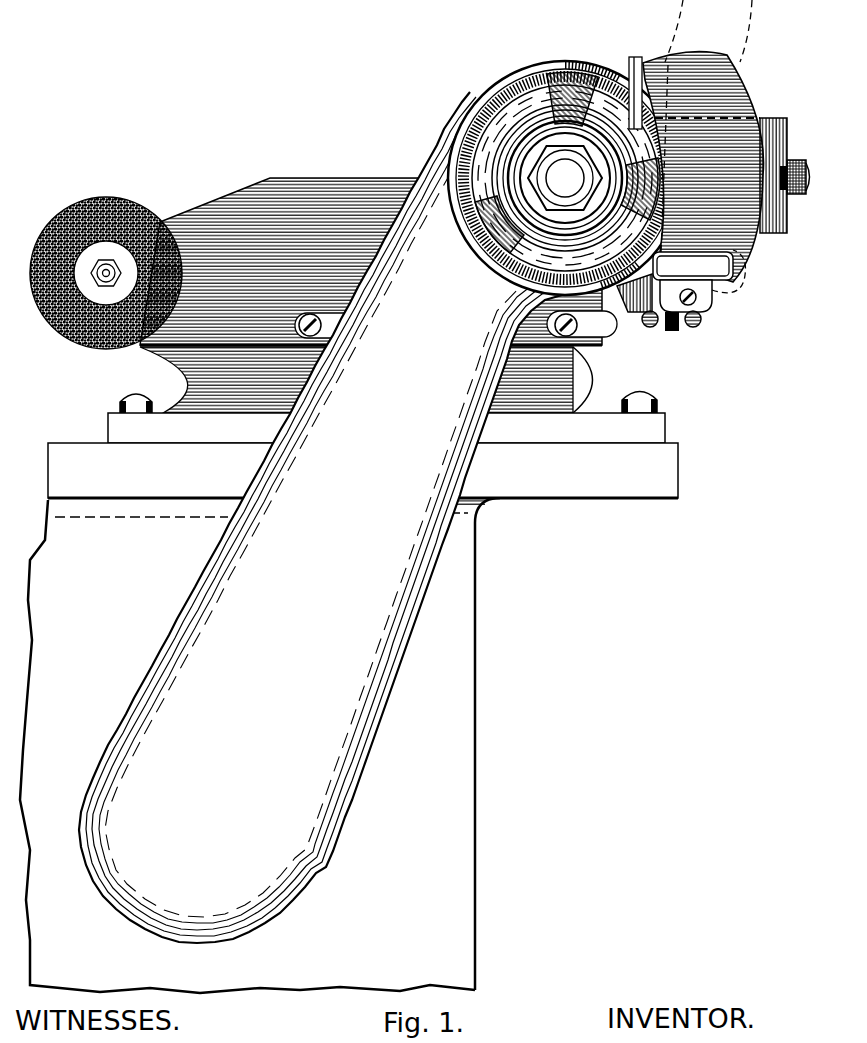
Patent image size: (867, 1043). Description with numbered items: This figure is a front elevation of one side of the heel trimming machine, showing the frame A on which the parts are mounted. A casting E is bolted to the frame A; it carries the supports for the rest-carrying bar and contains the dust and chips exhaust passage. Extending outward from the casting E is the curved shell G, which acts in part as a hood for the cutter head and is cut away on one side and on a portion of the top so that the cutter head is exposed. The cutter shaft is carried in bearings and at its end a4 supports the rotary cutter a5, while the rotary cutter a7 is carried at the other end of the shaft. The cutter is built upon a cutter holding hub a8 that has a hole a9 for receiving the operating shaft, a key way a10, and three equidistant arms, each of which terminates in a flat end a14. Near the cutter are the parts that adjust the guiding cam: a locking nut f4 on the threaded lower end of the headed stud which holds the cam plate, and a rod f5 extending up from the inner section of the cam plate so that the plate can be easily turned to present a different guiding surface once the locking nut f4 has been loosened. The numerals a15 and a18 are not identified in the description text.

The frame A is at (260, 745).
The casting E is at (329, 517).
The curved shell G is at (500, 84).
The shaft end a4 is at (565, 178).
The rotary cutter a5 is at (478, 120).
The rotary cutter a7 is at (785, 228).
The cutter holding hub a8 is at (705, 297).
The hole a9 is at (735, 118).
The key way a10 is at (666, 60).
The flat end a14 is at (797, 170).
The cam a15 is at (500, 266).
The lug a18 is at (640, 300).
The locking nut f4 is at (742, 337).
The rod f5 is at (638, 56).